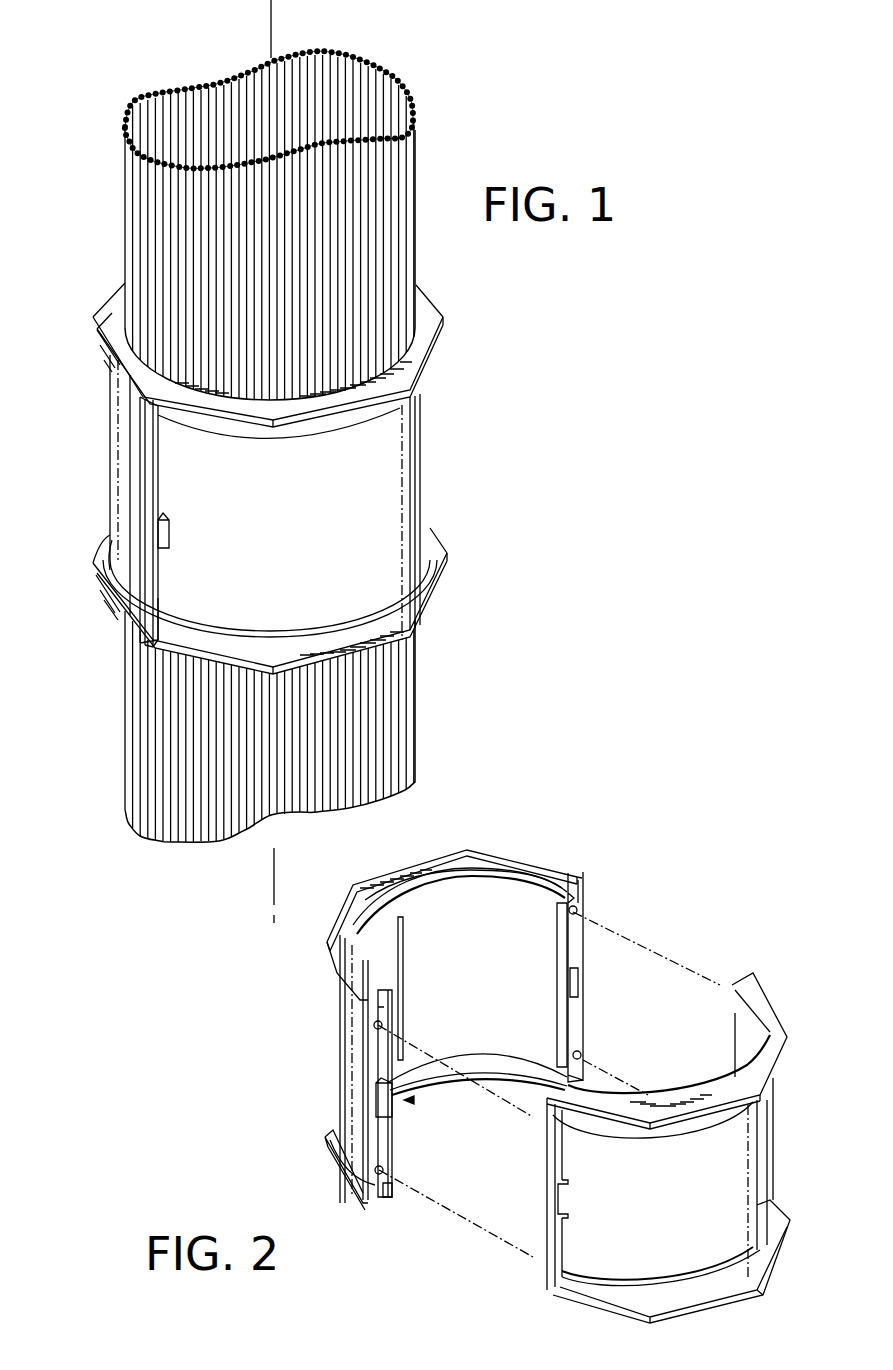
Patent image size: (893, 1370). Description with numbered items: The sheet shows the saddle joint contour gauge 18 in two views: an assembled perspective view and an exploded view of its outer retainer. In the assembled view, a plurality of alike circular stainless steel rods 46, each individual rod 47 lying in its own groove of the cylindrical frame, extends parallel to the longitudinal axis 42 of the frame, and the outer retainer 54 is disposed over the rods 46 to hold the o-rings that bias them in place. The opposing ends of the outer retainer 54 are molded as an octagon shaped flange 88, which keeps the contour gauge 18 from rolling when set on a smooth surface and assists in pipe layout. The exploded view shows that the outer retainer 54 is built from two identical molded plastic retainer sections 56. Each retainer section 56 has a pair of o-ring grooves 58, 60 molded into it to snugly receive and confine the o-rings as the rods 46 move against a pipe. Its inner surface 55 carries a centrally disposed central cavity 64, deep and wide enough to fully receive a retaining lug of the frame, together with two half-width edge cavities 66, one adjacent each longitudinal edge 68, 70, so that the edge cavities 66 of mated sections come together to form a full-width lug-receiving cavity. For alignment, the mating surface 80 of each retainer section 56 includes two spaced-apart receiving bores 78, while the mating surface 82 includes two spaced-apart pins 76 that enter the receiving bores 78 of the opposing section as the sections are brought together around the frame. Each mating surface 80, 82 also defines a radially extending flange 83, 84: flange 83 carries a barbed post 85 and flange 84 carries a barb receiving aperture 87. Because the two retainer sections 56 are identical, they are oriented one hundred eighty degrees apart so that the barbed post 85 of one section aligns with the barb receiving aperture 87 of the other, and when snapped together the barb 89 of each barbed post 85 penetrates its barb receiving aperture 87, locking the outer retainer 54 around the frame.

In FIG. 1, the contour gauge 18 is at (578, 340).
In FIG. 1, the longitudinal axis 42 is at (277, 28).
In FIG. 1, the rods 46 is at (442, 82).
In FIG. 1, the individual rod 47 is at (352, 53).
In FIG. 1, the outer retainer 54 is at (75, 403).
In FIG. 2, the outer retainer 54 is at (727, 862).
In FIG. 2, the inner surface 55 is at (524, 934).
In FIG. 1, the retainer section 56 is at (422, 430).
In FIG. 2, the retainer section 56 is at (492, 846).
In FIG. 2, the o-ring groove 58 is at (436, 888).
In FIG. 2, the o-ring groove 60 is at (522, 1082).
In FIG. 2, the central cavity 64 is at (406, 982).
In FIG. 2, the edge cavity 66 is at (556, 1000).
In FIG. 2, the longitudinal edge 68 is at (392, 1182).
In FIG. 2, the longitudinal edge 70 is at (546, 872).
In FIG. 2, the pin 76 is at (577, 905).
In FIG. 2, the receiving bore 78 is at (371, 1030).
In FIG. 2, the mating surface 80 is at (332, 1142).
In FIG. 2, the mating surface 82 is at (582, 915).
In FIG. 1, the flange 83 is at (142, 543).
In FIG. 2, the flange 83 is at (370, 1027).
In FIG. 1, the flange 84 is at (160, 612).
In FIG. 2, the flange 84 is at (595, 926).
In FIG. 2, the barbed post 85 is at (410, 1097).
In FIG. 2, the barb receiving aperture 87 is at (582, 986).
In FIG. 1, the octagon shaped flange 88 is at (446, 300).
In FIG. 2, the octagon shaped flange 88 is at (455, 850).
In FIG. 1, the barb 89 is at (170, 528).
In FIG. 2, the barb 89 is at (392, 1114).